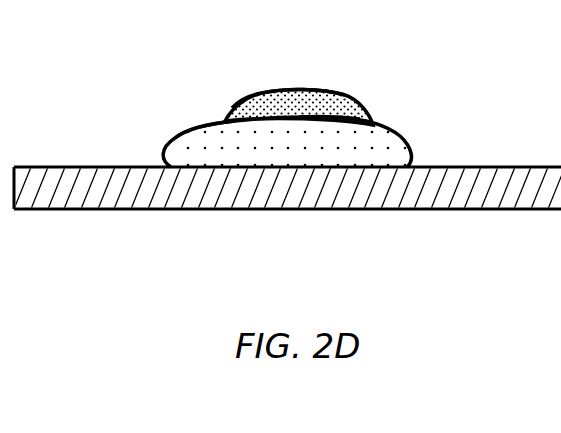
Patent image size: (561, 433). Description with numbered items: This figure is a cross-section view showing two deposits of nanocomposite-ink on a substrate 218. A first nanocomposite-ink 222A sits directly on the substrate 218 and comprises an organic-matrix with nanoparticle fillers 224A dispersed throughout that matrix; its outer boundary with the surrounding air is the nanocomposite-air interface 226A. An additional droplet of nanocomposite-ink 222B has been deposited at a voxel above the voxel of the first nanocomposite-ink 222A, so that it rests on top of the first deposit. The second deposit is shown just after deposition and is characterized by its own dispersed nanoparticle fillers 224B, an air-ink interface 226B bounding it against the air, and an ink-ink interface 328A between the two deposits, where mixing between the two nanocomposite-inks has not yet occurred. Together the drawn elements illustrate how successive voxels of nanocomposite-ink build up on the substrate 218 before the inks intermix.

The substrate 218 is at (207, 208).
The nanocomposite-ink 222A is at (200, 125).
The nanoparticle fillers 224A is at (227, 147).
The nanocomposite-air interface 226A is at (203, 132).
The nanocomposite-ink 222B is at (368, 103).
The second bump body material 224B is at (296, 100).
The air-ink interface 226B is at (247, 98).
The interface region 328A is at (303, 110).